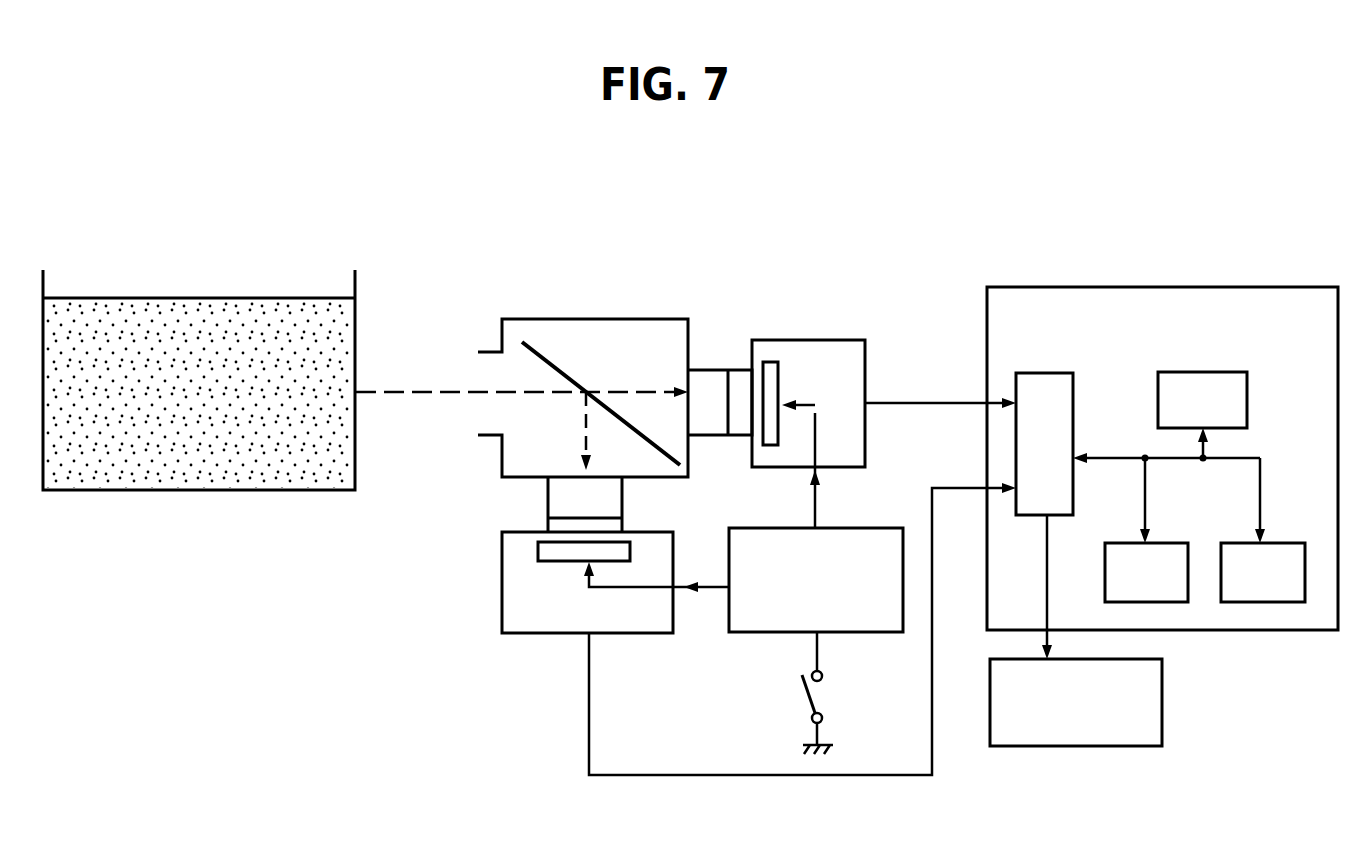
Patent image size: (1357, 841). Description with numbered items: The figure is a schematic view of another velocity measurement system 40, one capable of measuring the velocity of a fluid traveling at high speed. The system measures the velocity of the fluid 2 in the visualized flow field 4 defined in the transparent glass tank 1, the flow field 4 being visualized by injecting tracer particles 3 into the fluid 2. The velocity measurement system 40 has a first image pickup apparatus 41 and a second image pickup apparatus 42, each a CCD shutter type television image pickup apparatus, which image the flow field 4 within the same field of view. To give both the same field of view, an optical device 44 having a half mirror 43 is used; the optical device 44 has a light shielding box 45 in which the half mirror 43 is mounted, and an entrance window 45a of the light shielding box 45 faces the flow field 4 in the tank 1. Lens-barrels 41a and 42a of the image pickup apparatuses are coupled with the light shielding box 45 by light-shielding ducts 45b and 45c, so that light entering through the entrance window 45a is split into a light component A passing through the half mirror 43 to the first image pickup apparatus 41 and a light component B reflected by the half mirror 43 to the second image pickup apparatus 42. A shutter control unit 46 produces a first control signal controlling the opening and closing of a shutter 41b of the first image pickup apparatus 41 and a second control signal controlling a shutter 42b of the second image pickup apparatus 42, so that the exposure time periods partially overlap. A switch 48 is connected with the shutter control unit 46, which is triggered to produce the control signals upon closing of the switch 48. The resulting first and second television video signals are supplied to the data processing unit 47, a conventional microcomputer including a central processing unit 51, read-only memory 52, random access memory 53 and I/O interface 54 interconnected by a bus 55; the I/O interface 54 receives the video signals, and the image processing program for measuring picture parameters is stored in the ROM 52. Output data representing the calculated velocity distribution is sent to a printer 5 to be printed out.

The tank 1 is at (355, 280).
The fluid 2 is at (130, 298).
The tracer particles 3 is at (260, 335).
The flow field 4 is at (78, 262).
The printer 5 is at (1162, 708).
The velocity measurement system 40 is at (799, 213).
The first image pickup apparatus 41 is at (816, 340).
The lens-barrel 41a is at (742, 422).
The shutter 41b is at (779, 378).
The second image pickup apparatus 42 is at (502, 593).
The lens-barrel 42a is at (607, 528).
The shutter 42b is at (556, 562).
The half mirror 43 is at (560, 374).
The optical device 44 is at (600, 298).
The light shielding box 45 is at (518, 319).
The entrance window 45a is at (492, 405).
The light-shielding duct 45b is at (708, 370).
The light-shielding duct 45c is at (548, 503).
The shutter control unit 46 is at (852, 618).
The data processing unit 47 is at (1148, 287).
The switch 48 is at (822, 692).
The central processing unit 51 is at (1247, 398).
The read-only memory 52 is at (1170, 543).
The random access memory 53 is at (1288, 543).
The I/O interface 54 is at (1046, 382).
The bus 55 is at (1111, 458).